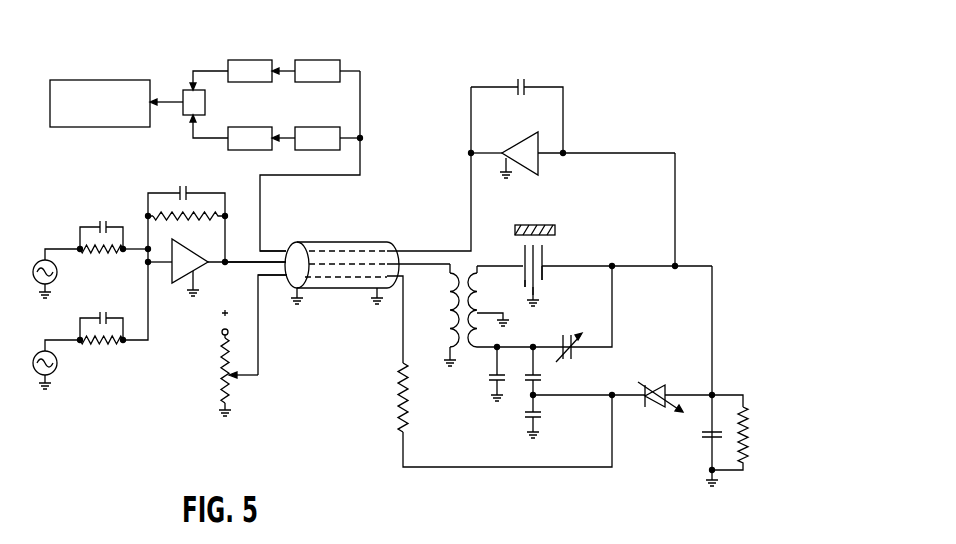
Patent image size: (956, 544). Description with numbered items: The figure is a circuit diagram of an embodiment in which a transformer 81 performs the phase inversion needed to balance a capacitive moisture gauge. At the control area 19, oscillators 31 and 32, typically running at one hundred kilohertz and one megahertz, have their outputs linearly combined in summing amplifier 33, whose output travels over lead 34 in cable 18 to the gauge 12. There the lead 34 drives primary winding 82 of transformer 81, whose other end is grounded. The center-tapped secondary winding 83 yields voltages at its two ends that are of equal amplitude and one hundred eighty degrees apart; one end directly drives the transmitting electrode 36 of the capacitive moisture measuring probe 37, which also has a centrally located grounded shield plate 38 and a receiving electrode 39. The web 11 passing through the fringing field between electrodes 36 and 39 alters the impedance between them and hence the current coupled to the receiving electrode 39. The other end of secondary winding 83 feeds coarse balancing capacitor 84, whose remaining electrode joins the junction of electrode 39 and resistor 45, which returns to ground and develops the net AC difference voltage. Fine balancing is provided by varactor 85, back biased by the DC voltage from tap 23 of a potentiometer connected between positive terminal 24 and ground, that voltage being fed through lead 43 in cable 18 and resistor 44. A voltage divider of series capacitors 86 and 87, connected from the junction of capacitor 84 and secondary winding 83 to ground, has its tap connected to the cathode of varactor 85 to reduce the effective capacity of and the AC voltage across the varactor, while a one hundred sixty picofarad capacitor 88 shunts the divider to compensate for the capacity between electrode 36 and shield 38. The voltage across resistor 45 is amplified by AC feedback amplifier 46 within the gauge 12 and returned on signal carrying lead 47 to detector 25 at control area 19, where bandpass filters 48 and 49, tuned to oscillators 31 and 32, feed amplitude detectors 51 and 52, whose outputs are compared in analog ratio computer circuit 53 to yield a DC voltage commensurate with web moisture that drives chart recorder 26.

The web 11 is at (547, 225).
The gauge 12 is at (633, 224).
The cable 18 is at (345, 242).
The control area 19 is at (136, 164).
The tap 23 is at (250, 378).
The terminal 24 is at (219, 334).
The detector 25 is at (270, 46).
The chart recorder 26 is at (131, 80).
The oscillator 31 is at (60, 273).
The oscillator 32 is at (60, 365).
The summing amplifier 33 is at (163, 283).
The lead 34 is at (251, 260).
The transmitting electrode 36 is at (523, 283).
The capacitive moisture measuring probe 37 is at (549, 262).
The shield plate 38 is at (537, 297).
The receiving electrode 39 is at (545, 276).
The lead 43 is at (276, 280).
The resistor 44 is at (398, 412).
The resistor 45 is at (750, 440).
The AC feedback amplifier 46 is at (596, 122).
The signal carrying lead 47 is at (275, 250).
The bandpass filter 48 is at (318, 125).
The bandpass filter 49 is at (326, 58).
The amplitude detector 51 is at (232, 58).
The amplitude detector 52 is at (262, 125).
The analog ratio computer circuit 53 is at (185, 90).
The transformer 81 is at (462, 350).
The primary winding 82 is at (446, 317).
The secondary winding 83 is at (486, 290).
The coarse balancing capacitor 84 is at (568, 334).
The varactor 85 is at (654, 411).
The capacitor 86 is at (546, 380).
The capacitor 87 is at (544, 418).
The capacitor 88 is at (490, 379).